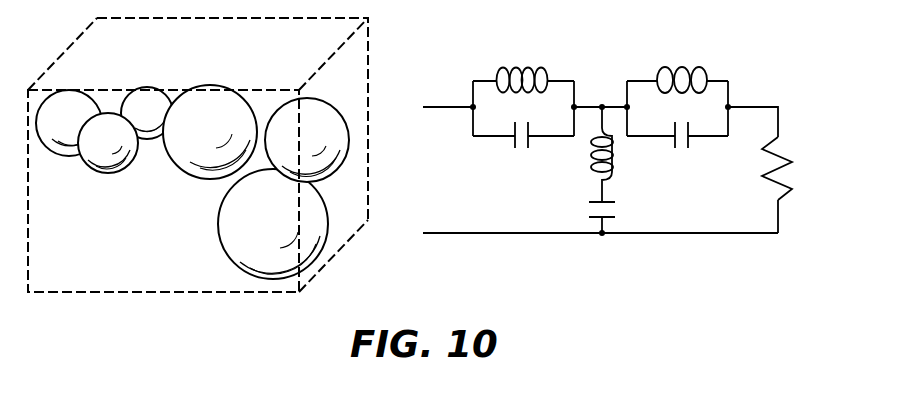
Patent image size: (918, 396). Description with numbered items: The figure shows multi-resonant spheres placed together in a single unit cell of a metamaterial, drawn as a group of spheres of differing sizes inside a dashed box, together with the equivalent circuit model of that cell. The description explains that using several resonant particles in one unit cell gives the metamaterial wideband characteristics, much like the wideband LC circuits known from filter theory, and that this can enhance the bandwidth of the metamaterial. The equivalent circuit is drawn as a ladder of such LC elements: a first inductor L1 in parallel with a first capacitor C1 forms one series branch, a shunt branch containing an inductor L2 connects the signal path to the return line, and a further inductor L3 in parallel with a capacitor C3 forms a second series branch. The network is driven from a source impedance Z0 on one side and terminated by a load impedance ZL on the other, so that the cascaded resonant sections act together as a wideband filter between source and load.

The first inductor L1 is at (523, 87).
The first capacitor C1 is at (523, 152).
The second inductor (shunt) L2 is at (615, 170).
The third inductor L3 is at (677, 87).
The third capacitor C3 is at (677, 152).
The source impedance Z0 is at (426, 175).
The load impedance ZL is at (760, 168).